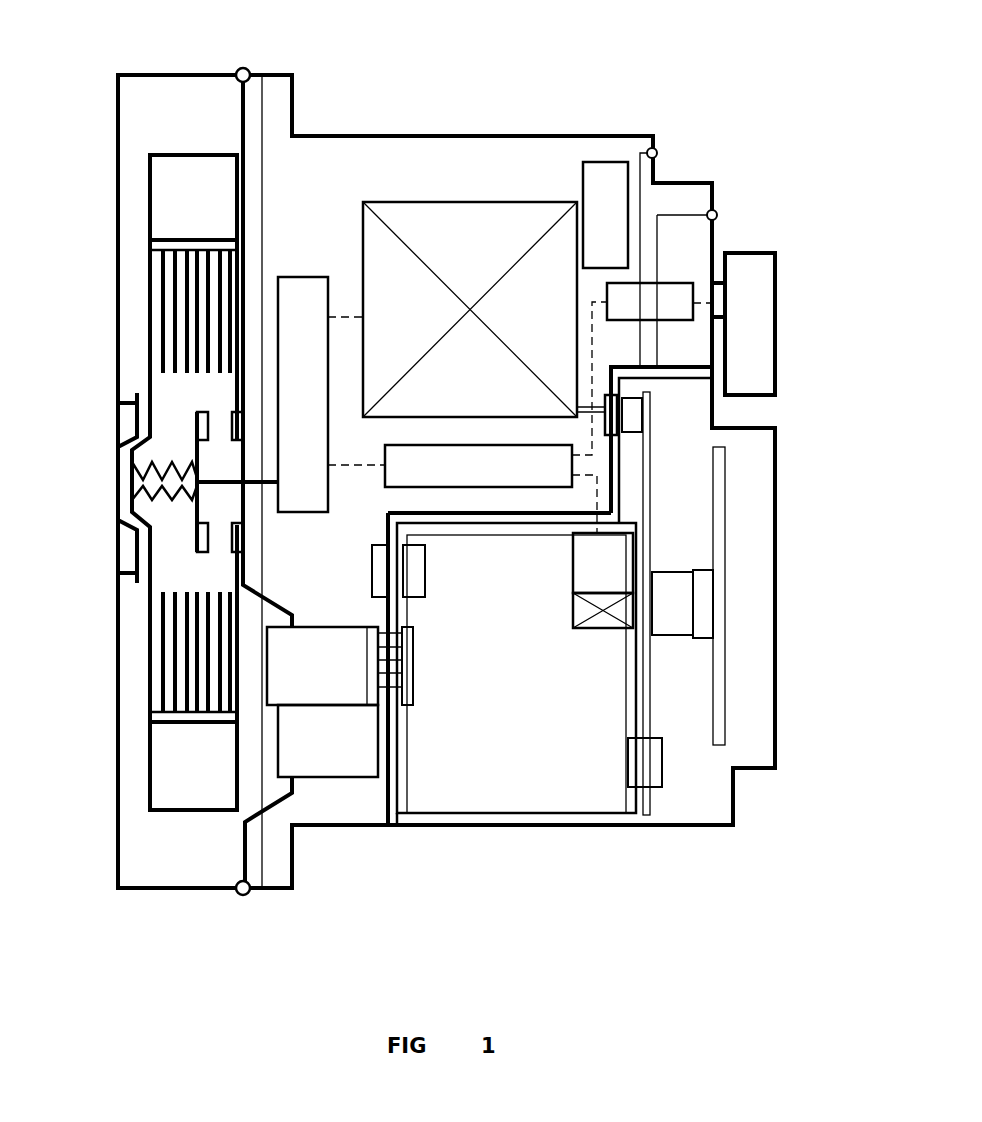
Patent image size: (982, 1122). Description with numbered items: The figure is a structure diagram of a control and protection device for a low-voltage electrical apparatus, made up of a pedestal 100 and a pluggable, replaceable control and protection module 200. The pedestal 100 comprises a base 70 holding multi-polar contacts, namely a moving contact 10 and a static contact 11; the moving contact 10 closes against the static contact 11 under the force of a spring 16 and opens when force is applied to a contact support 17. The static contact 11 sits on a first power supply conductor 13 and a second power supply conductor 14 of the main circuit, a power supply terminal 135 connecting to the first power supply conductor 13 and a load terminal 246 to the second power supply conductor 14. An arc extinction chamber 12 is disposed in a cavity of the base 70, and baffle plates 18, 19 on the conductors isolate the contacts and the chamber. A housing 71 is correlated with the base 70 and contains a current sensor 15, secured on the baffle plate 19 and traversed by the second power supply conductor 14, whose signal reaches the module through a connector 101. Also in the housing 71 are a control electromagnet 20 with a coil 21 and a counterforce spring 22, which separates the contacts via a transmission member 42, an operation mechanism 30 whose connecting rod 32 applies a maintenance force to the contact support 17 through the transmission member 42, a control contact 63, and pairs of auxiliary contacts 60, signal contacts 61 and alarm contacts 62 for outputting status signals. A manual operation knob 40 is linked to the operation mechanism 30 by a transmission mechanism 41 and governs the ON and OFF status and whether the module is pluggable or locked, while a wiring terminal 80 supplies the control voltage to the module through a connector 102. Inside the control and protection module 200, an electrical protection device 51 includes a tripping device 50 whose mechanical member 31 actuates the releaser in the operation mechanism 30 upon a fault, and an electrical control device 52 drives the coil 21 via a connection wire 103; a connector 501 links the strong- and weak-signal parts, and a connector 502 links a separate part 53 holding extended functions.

The pedestal 100 is at (148, 135).
The moving contact 10 is at (200, 425).
The static contact 11 is at (238, 416).
The arc extinction chamber 12 is at (182, 307).
The first power supply conductor 13 is at (238, 130).
The second power supply conductor 14 is at (242, 855).
The current sensor 15 is at (322, 702).
The spring 16 is at (200, 480).
The contact support 17 is at (243, 486).
The baffle plate 18 is at (267, 172).
The baffle plate 19 is at (262, 852).
The control electromagnet 20 is at (470, 252).
The coil 21 is at (482, 224).
The counterforce spring 22 is at (338, 305).
The operation mechanism 30 is at (478, 466).
The mechanical member 31 is at (650, 558).
The connecting rod 32 is at (343, 475).
The manual operation knob 40 is at (762, 367).
The transmission mechanism 41 is at (695, 295).
The transmission member 42 is at (303, 394).
The tripping device 50 is at (554, 624).
The electrical protection device 51 is at (518, 798).
The electrical control device 52 is at (648, 510).
The separate part 53 is at (720, 668).
The auxiliary contacts 60 is at (605, 215).
The signal contacts 61 is at (606, 211).
The alarm contacts 62 is at (606, 237).
The control contact 63 is at (658, 300).
The base 70 is at (118, 860).
The housing 71 is at (478, 136).
The wiring terminal 80 is at (718, 215).
The connector / signal input 101 is at (407, 680).
The connector 102 is at (420, 580).
The connection wire 103 is at (633, 420).
The power supply terminal 135 is at (250, 72).
The control and protection module 200 is at (619, 624).
The load terminal 246 is at (244, 896).
The connector 501 is at (656, 750).
The connector 502 is at (696, 600).